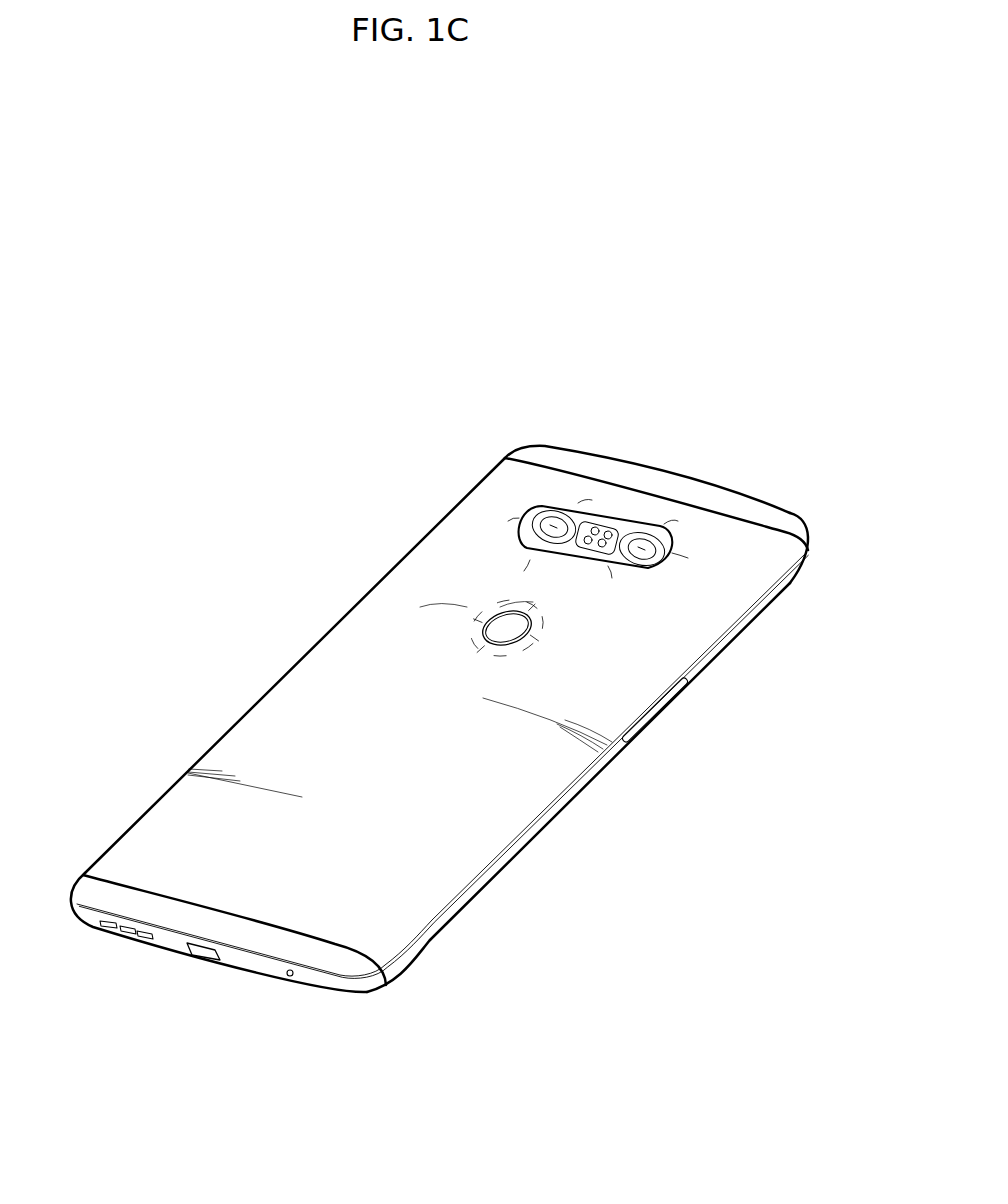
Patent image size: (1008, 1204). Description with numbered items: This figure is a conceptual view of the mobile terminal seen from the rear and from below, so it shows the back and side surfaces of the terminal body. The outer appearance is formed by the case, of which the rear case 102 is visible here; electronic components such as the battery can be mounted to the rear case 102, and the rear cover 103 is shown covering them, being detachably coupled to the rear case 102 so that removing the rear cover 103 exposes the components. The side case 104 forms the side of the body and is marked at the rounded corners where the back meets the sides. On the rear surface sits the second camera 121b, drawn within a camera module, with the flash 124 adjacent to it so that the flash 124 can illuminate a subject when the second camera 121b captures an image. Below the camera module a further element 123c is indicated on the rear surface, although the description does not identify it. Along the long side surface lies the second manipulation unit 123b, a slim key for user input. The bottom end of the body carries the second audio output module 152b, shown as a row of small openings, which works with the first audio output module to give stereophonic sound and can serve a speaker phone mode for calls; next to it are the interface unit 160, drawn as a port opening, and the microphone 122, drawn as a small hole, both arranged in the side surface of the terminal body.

The rear case 102 is at (737, 632).
The rear cover 103 is at (513, 823).
The side case 104 is at (780, 523).
The second camera 121b is at (637, 547).
The microphone 122 is at (290, 976).
The second manipulation unit 123b is at (673, 693).
The rear input unit 123c is at (507, 624).
The flash 124 is at (592, 539).
The second audio output module 152b is at (123, 935).
The interface unit 160 is at (200, 953).